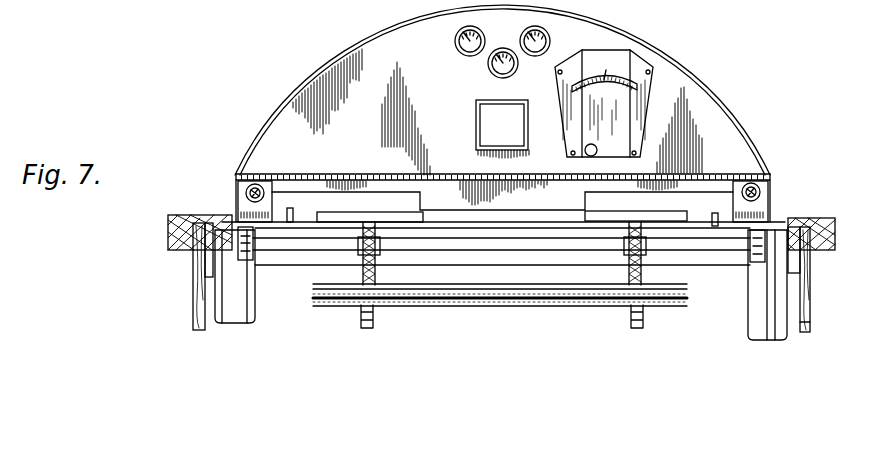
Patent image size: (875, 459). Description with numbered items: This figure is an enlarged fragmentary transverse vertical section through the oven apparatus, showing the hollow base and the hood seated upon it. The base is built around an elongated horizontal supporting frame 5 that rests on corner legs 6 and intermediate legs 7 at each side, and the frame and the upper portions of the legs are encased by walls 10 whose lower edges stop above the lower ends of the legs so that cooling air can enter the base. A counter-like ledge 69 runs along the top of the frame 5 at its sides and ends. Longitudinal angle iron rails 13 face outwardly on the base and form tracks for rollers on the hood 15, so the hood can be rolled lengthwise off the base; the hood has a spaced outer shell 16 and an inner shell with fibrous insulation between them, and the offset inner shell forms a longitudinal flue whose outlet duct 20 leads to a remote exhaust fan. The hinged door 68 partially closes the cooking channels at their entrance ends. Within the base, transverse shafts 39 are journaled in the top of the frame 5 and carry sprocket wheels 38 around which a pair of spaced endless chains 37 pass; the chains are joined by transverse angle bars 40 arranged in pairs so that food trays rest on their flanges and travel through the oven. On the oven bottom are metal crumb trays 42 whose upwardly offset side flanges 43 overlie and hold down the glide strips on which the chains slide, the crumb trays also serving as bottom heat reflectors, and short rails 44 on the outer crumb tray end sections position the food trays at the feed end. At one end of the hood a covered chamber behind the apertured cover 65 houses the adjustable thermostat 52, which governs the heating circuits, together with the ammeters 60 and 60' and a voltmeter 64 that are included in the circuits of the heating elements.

The supporting frame 5 is at (782, 228).
The corner legs 6 is at (796, 320).
The intermediate legs 7 is at (752, 318).
The walls 10 is at (195, 300).
The angle iron rails 13 is at (280, 222).
The hood 15 is at (336, 45).
The outer shell 16 is at (393, 22).
The outlet duct 20 is at (476, 123).
The endless chains 37 is at (378, 318).
The sprocket wheels 38 is at (357, 252).
The transverse shafts 39 is at (455, 250).
The transverse angle bars 40 is at (373, 222).
The crumb trays 42 is at (312, 222).
The side flanges 43 is at (384, 222).
The short rails 44 is at (294, 210).
The thermostat 52 is at (615, 63).
The ammeter 60 is at (451, 41).
The ammeter 60' is at (558, 41).
The voltmeter 64 is at (492, 70).
The cover 65 is at (690, 92).
The hinged door 68 is at (478, 183).
The ledge 69 is at (200, 218).